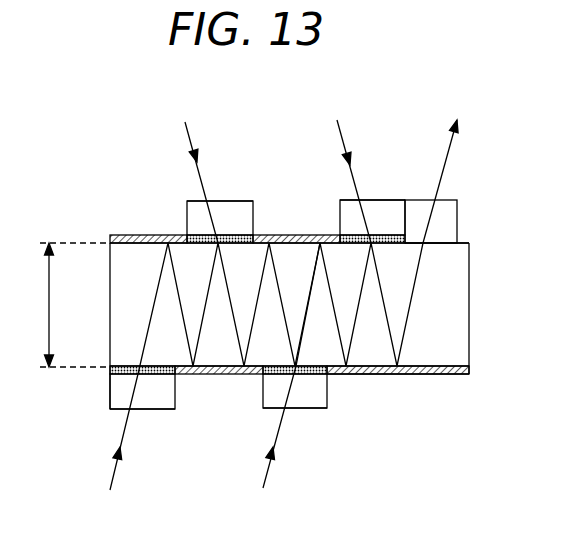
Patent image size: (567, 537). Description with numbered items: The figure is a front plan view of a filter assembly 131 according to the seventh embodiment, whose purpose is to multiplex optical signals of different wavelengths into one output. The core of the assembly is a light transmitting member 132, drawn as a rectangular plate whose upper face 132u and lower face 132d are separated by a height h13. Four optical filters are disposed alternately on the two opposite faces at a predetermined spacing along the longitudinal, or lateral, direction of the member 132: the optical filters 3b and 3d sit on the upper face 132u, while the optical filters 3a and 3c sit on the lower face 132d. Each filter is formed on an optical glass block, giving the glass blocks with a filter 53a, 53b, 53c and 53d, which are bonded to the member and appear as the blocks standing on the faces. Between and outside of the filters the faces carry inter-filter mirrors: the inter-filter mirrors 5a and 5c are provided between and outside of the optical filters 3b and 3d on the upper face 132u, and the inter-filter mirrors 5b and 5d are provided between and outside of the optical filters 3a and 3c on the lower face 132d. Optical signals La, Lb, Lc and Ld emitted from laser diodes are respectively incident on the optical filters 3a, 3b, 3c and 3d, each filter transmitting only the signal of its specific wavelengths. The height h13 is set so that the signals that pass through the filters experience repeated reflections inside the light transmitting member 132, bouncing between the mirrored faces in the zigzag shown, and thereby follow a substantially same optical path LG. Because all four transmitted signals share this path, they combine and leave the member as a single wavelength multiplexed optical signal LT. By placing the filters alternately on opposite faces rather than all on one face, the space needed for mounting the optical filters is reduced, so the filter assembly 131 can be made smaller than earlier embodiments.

The filter assembly 131 is at (118, 155).
The light transmitting member 132 is at (470, 292).
The upper face 132u is at (465, 243).
The lower face 132d is at (443, 374).
The height h13 is at (60, 305).
The optical filter 3a is at (158, 374).
The optical filter 3b is at (200, 235).
The optical filter 3c is at (317, 374).
The optical filter 3d is at (365, 236).
The inter-filter mirror 5a is at (140, 235).
The inter-filter mirror 5b is at (203, 374).
The inter-filter mirror 5c is at (312, 235).
The inter-filter mirror 5d is at (372, 374).
The glass block with a filter 53a is at (143, 409).
The glass block with a filter 53b is at (218, 201).
The glass block with a filter 53c is at (298, 408).
The glass block with a filter 53d is at (376, 200).
The optical signal La is at (112, 466).
The optical signal Lb is at (188, 133).
The optical signal Lc is at (265, 467).
The optical signal Ld is at (340, 131).
The optical path LG is at (410, 315).
The wavelength multiplexed optical signal LT is at (447, 158).